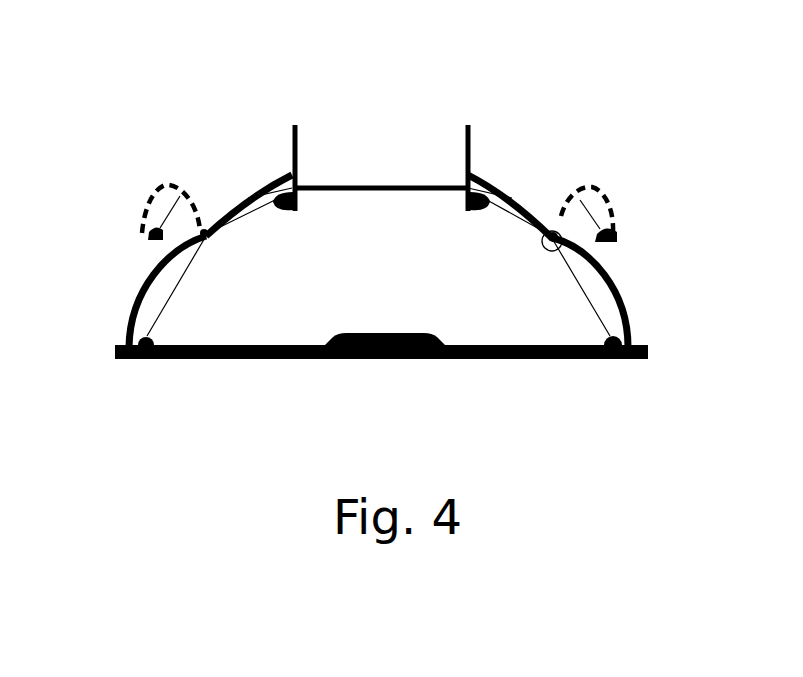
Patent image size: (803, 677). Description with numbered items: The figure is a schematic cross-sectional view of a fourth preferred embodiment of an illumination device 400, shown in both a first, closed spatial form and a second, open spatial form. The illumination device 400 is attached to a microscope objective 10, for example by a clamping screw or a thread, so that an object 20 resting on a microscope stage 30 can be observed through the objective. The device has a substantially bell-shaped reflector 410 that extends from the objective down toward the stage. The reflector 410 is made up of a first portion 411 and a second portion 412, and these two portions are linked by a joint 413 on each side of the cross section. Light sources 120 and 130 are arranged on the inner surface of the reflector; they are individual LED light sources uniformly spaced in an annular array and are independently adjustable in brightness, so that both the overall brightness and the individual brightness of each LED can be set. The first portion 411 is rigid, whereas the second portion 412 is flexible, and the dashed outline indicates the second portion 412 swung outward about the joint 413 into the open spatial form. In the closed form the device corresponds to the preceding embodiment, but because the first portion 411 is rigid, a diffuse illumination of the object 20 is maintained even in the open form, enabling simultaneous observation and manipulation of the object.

The illumination device 400 is at (102, 137).
The reflector 410 is at (530, 120).
The first portion 411 is at (490, 180).
The second portion 412 is at (590, 187).
The joint 413 is at (542, 249).
The microscope objective 10 is at (353, 186).
The object 20 is at (370, 331).
The microscope stage 30 is at (174, 360).
The light source 120 is at (157, 334).
The light source 130 is at (283, 212).